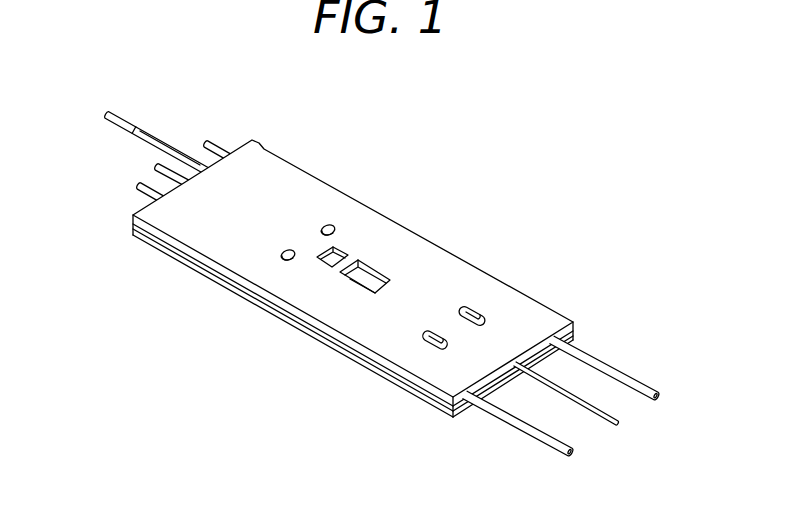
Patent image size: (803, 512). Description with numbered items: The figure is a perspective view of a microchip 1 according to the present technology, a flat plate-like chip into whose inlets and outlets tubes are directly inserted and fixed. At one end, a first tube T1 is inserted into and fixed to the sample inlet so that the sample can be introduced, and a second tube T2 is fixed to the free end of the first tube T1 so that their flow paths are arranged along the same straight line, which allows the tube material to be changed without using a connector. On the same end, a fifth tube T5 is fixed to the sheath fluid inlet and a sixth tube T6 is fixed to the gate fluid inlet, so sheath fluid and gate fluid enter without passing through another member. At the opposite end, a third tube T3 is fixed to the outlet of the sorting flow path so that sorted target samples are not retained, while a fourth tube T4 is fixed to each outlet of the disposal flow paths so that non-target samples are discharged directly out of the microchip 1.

The microchip 1 is at (536, 217).
The first tube T1 is at (155, 135).
The second tube T2 is at (121, 114).
The third tube T3 is at (598, 417).
The fourth tube T4 is at (605, 367).
The fifth tube T5 is at (215, 140).
The sixth tube T6 is at (157, 165).